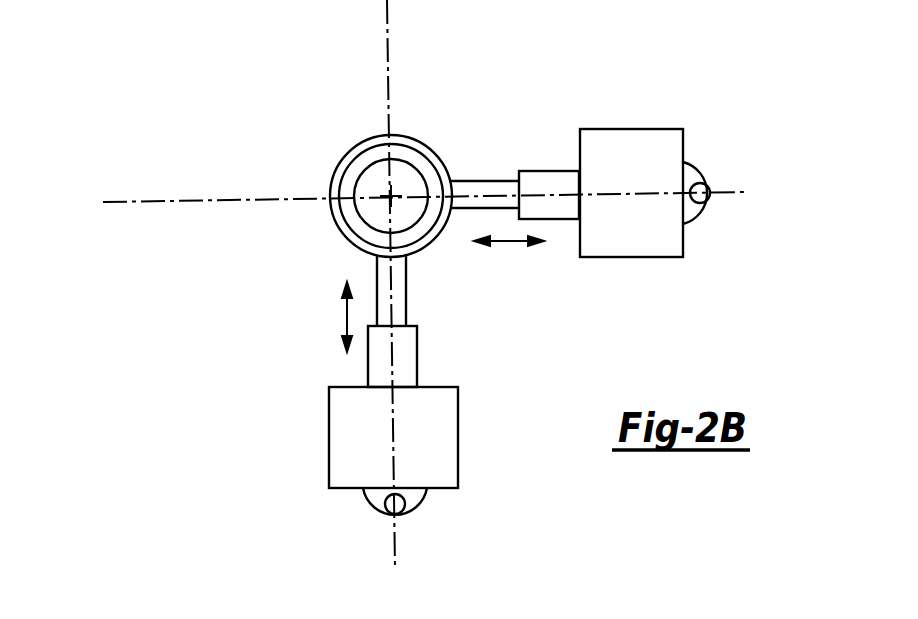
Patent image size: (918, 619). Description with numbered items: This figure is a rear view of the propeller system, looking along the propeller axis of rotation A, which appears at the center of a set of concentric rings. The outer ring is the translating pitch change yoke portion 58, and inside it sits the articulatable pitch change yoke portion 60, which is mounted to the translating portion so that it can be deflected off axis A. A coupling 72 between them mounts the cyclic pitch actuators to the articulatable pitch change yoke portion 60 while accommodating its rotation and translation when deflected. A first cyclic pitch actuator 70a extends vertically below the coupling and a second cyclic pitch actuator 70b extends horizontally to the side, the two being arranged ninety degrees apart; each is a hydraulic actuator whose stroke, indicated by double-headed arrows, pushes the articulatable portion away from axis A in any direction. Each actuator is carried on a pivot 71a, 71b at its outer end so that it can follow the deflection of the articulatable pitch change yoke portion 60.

The translating pitch change yoke portion 58 is at (342, 158).
The coupling 72 is at (423, 167).
The articulatable pitch change yoke portion 60 is at (412, 220).
The propeller axis of rotation A is at (391, 196).
The first cyclic pitch actuator 70a is at (458, 437).
The pivot 71a is at (420, 513).
The second cyclic pitch actuator 70b is at (632, 129).
The pivot 71b is at (718, 177).